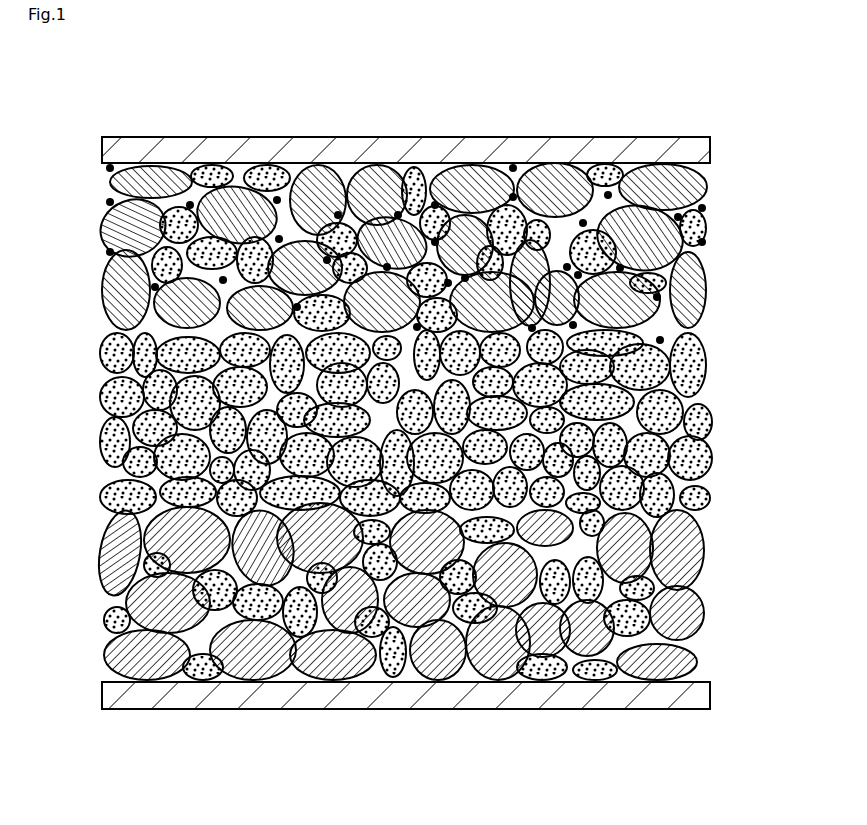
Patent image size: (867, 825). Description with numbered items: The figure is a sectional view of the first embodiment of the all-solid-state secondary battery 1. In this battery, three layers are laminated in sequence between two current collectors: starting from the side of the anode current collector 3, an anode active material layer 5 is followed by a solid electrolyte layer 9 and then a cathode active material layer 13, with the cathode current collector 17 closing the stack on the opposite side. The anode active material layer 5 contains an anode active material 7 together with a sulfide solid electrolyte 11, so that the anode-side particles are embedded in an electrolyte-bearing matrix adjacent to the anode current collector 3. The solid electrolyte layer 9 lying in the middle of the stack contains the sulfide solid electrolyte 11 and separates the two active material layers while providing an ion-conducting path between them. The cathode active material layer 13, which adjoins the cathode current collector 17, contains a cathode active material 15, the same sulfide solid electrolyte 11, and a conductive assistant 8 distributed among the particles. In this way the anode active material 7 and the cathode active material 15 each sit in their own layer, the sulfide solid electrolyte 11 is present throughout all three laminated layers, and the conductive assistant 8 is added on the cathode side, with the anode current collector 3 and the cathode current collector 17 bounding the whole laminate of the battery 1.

The all-solid-state secondary battery 1 is at (650, 118).
The anode current collector 3 is at (272, 712).
The anode active material layer 5 is at (436, 591).
The anode active material 7 is at (698, 657).
The conductive assistant 8 is at (513, 164).
The solid electrolyte layer 9 is at (445, 423).
The sulfide solid electrolyte 11 is at (730, 365).
The cathode active material layer 13 is at (441, 206).
The cathode active material 15 is at (704, 193).
The cathode current collector 17 is at (268, 150).